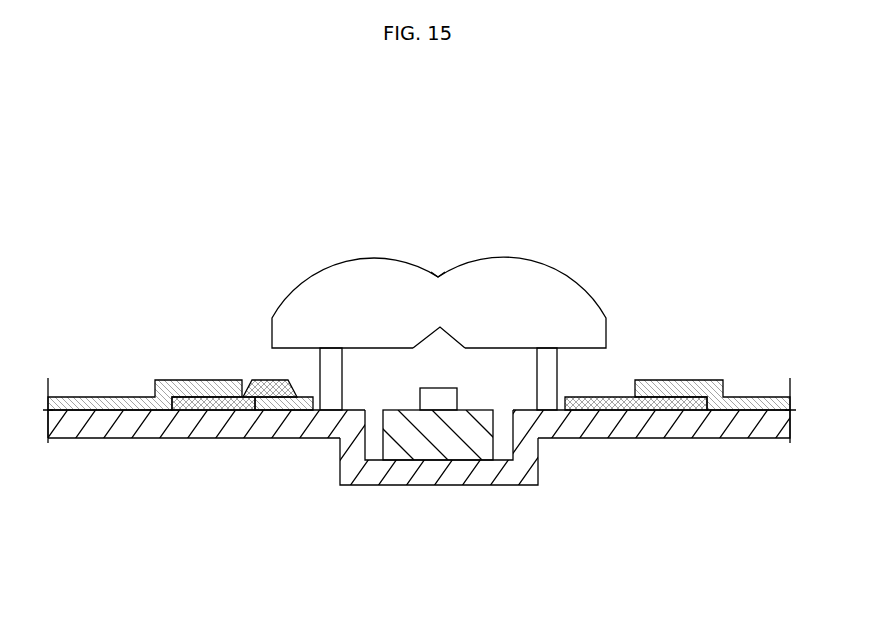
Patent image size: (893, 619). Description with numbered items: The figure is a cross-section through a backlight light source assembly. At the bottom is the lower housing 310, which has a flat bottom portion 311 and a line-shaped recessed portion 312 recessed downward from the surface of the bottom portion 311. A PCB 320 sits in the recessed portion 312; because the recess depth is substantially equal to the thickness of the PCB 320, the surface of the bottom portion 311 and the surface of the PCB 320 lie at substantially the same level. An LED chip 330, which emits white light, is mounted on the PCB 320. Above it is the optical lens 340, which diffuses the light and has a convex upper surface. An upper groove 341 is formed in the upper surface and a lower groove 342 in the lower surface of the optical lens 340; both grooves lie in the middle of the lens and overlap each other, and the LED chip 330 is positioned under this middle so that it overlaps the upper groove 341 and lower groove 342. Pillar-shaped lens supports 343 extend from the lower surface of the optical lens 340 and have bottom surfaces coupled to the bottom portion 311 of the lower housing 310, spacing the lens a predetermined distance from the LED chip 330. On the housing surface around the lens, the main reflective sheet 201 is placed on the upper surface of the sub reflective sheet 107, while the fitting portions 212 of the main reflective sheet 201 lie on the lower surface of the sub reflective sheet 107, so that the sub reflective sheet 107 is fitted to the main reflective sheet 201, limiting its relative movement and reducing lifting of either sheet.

The sub reflective sheet 107 is at (215, 403).
The main reflective sheet 201 is at (115, 403).
The fitting portion 212 is at (270, 393).
The lower housing 310 is at (446, 467).
The bottom portion 311 is at (245, 425).
The recessed portion 312 is at (407, 477).
The PCB 320 is at (452, 442).
The LED chip 330 is at (457, 400).
The optical lens 340 is at (535, 247).
The upper groove 341 is at (438, 266).
The lower groove 342 is at (440, 346).
The lens support 343 is at (550, 368).